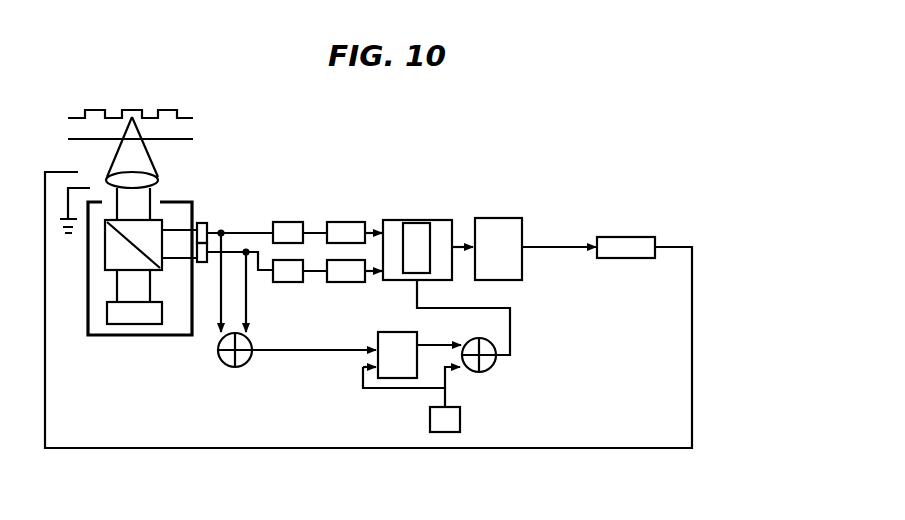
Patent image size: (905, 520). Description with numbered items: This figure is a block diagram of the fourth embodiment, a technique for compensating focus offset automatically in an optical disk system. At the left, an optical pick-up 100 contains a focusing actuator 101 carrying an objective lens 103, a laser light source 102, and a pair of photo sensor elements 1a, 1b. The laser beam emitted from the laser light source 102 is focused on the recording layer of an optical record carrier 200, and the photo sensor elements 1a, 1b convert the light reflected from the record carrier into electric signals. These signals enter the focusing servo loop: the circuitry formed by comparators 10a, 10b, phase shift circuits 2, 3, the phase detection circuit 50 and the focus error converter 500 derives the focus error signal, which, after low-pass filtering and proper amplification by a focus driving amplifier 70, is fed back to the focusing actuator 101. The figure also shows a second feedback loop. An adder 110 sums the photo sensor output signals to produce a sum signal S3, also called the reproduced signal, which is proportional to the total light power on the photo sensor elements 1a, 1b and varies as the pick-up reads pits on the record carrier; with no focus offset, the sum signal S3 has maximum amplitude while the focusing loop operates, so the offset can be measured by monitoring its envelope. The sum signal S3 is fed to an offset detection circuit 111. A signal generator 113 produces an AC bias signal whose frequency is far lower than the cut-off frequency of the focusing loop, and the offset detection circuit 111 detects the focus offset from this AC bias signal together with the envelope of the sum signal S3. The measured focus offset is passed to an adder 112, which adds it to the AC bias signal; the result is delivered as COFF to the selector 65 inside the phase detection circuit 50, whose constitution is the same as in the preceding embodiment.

The optical record carrier 200 is at (182, 125).
The focusing actuator 101 is at (90, 177).
The objective lens 103 is at (158, 180).
The optical pick-up 100 is at (193, 333).
The laser light source 102 is at (140, 317).
The photo sensor element 1a is at (208, 233).
The photo sensor element 1b is at (208, 252).
The comparator 10a is at (282, 218).
The comparator 10b is at (283, 283).
The phase shift circuit 2 is at (343, 218).
The phase shift circuit 3 is at (347, 283).
The phase detection circuit 50 is at (398, 218).
The selector 65 is at (440, 220).
The focus error converter 500 is at (490, 217).
The focus driving amplifier 70 is at (670, 157).
The adder 110 is at (227, 367).
The sum signal S3 is at (290, 355).
The offset detection circuit 111 is at (387, 378).
The adder 112 is at (493, 368).
The signal generator 113 is at (460, 417).
The offset compensation output COFF is at (492, 317).